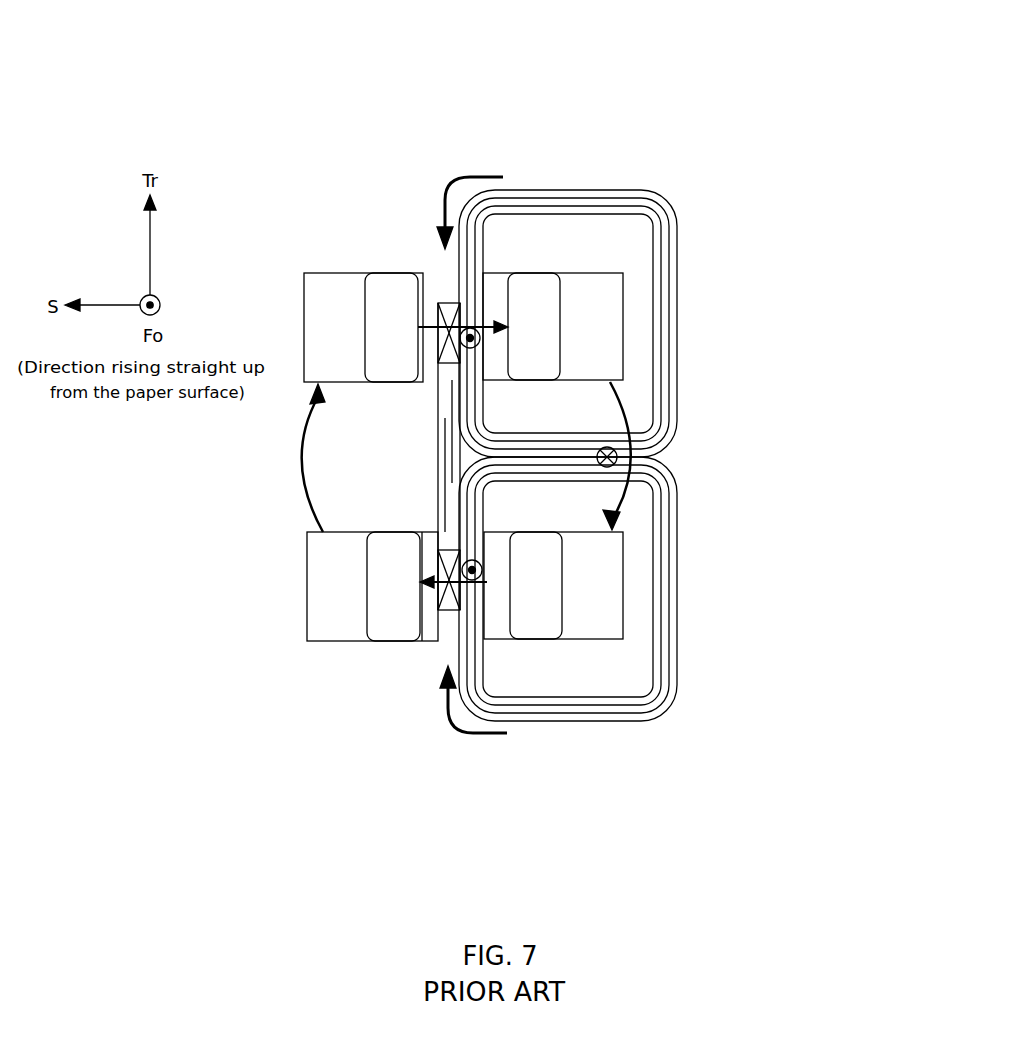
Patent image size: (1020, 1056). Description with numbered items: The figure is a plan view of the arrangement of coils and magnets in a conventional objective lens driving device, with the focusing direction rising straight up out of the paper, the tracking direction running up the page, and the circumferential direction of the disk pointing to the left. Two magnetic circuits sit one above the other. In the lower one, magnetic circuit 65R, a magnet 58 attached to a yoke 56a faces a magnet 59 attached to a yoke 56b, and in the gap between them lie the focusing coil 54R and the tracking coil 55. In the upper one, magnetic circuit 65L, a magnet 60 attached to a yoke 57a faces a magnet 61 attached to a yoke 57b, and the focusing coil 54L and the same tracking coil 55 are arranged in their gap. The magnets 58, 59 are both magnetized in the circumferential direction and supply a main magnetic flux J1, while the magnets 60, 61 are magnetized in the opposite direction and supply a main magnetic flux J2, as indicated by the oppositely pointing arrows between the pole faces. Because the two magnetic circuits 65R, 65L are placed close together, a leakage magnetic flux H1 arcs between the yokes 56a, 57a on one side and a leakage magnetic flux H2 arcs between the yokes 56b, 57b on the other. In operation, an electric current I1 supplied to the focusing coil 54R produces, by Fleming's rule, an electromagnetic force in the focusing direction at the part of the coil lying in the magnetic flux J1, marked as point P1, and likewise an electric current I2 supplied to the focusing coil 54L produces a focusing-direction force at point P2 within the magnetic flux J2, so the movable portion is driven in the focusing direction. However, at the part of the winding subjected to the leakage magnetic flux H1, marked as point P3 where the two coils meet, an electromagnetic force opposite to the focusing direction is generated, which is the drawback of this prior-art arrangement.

The focusing coil 54L is at (665, 300).
The focusing coil 54R is at (667, 590).
The tracking coil 55 is at (445, 440).
The yoke 56a is at (597, 641).
The yoke 56b is at (337, 641).
The yoke 57a is at (595, 283).
The yoke 57b is at (333, 283).
The magnet 58 is at (540, 641).
The magnet 59 is at (398, 641).
The magnet 60 is at (540, 283).
The magnet 61 is at (395, 283).
The magnetic circuit 65L is at (340, 74).
The magnetic circuit 65R is at (345, 839).
The electric current I1 is at (480, 737).
The electric current I2 is at (480, 175).
The magnetic flux J1 is at (477, 641).
The magnetic flux J2 is at (473, 327).
The point P1 is at (472, 560).
The point P2 is at (470, 348).
The point P3 is at (617, 451).
The leakage magnetic flux H1 is at (625, 412).
The leakage magnetic flux H2 is at (310, 497).